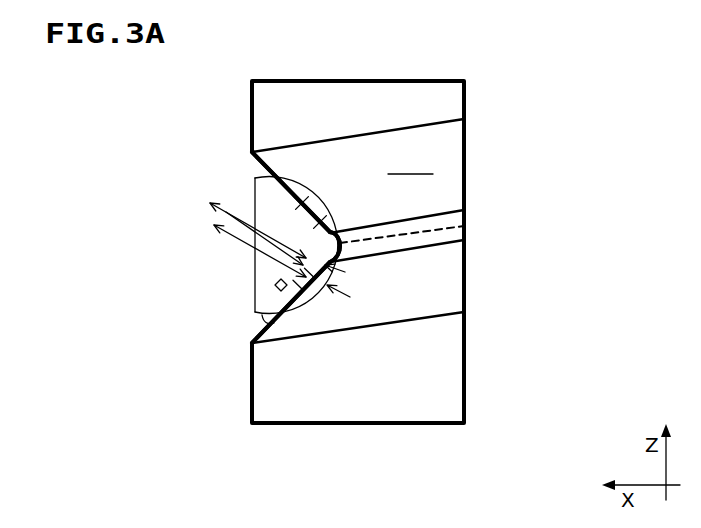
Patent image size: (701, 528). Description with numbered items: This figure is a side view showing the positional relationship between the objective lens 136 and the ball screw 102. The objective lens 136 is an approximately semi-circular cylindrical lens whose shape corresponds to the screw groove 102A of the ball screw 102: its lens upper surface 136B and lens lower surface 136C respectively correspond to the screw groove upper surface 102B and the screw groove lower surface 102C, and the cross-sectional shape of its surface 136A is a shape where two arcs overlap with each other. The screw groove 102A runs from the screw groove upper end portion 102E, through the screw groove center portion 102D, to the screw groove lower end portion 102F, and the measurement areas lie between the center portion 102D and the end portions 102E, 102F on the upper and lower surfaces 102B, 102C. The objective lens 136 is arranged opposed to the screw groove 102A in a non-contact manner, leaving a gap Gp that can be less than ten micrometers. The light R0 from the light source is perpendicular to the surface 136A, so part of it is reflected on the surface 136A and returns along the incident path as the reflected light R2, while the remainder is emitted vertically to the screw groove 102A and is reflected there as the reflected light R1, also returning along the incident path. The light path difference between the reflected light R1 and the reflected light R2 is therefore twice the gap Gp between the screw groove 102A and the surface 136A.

The ball screw 102 is at (393, 66).
The screw groove 102A is at (412, 163).
The screw groove upper surface 102B is at (272, 176).
The screw groove lower surface 102C is at (275, 340).
The screw groove center portion 102D is at (342, 244).
The screw groove upper end portion 102E is at (255, 150).
The screw groove lower end portion 102F is at (256, 348).
The objective lens 136 is at (265, 203).
The surface 136A is at (299, 207).
The lens upper surface 136B is at (313, 226).
The lens lower surface 136C is at (292, 303).
The gap Gp is at (347, 280).
The light R0 is at (248, 216).
The reflected light R1 is at (213, 198).
The reflected light R2 is at (254, 256).